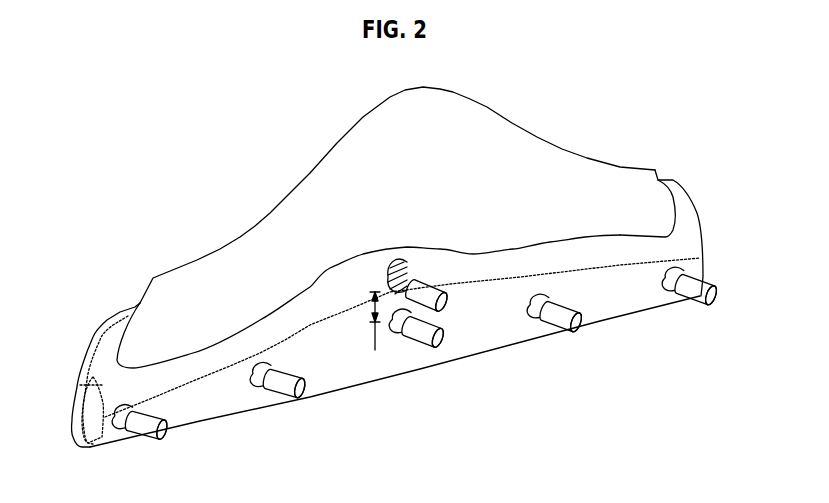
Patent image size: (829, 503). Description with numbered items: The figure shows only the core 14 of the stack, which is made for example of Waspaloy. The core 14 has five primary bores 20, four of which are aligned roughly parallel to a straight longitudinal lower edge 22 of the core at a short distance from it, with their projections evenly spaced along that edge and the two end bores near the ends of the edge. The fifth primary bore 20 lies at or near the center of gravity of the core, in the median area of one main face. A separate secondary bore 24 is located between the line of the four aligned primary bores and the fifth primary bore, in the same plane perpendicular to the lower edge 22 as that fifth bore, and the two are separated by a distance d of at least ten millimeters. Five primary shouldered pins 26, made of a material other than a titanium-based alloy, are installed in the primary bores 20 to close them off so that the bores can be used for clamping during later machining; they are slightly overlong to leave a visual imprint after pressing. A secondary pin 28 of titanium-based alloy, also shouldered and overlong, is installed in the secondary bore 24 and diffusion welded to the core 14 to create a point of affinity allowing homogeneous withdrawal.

The core 14 is at (294, 126).
The primary bore 20 is at (120, 428).
The longitudinal lower edge 22 is at (365, 392).
The secondary bore 24 is at (397, 334).
The primary shouldered pin 26 is at (163, 434).
The secondary pin 28 is at (441, 341).
The distance d is at (371, 321).